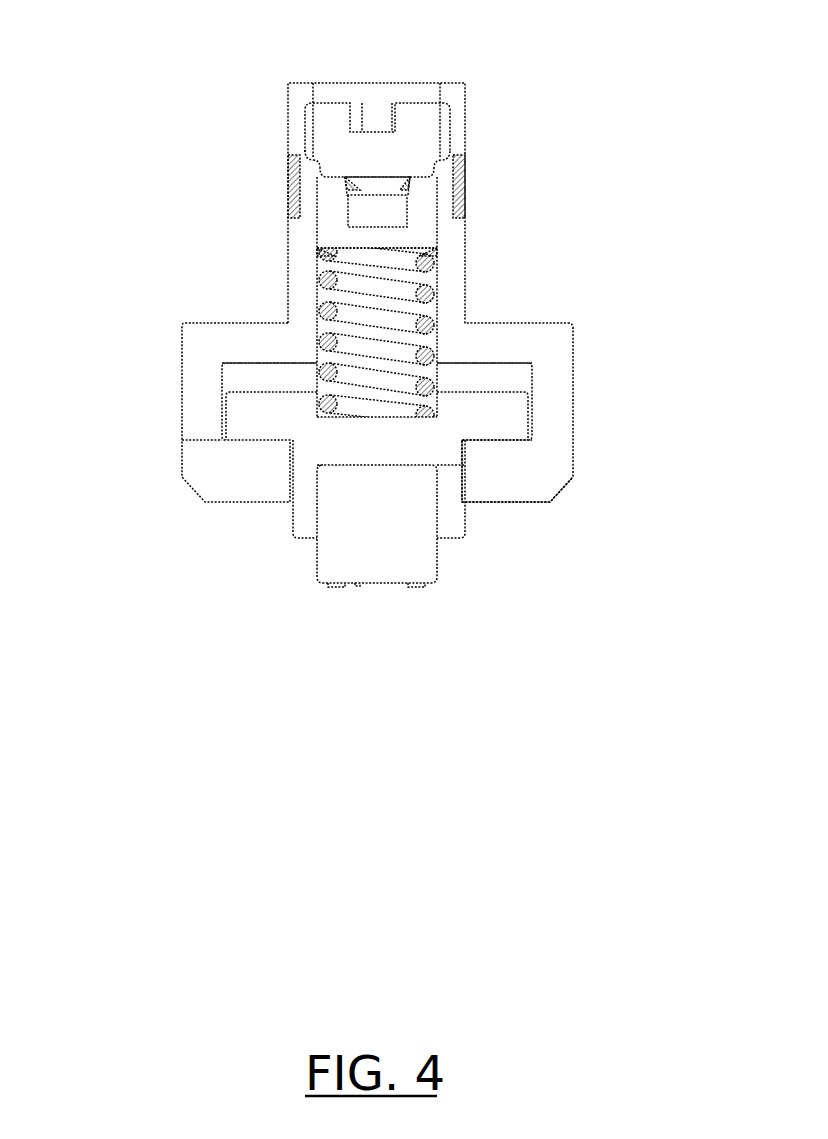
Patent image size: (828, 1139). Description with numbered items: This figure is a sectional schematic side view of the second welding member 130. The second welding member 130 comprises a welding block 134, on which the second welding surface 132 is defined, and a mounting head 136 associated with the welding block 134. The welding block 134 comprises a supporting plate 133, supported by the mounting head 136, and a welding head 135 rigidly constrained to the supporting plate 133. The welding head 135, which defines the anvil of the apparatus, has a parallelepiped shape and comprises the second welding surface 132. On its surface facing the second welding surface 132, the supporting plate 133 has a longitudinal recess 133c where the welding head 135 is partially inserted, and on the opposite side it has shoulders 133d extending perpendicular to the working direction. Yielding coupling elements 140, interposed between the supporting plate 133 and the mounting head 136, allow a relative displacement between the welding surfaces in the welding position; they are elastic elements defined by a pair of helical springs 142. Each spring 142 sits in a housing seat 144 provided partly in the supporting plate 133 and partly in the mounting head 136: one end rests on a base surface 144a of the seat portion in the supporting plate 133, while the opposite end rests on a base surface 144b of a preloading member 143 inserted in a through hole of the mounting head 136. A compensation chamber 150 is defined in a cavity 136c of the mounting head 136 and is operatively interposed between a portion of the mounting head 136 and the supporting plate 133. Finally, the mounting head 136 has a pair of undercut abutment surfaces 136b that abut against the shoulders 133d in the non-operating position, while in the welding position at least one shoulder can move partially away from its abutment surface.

The second welding member 130 is at (204, 176).
The second welding surface 132 is at (377, 587).
The supporting plate 133 is at (532, 425).
The longitudinal recess 133c is at (405, 467).
The shoulders 133d is at (248, 417).
The welding block 134 is at (483, 463).
The welding head 135 is at (385, 517).
The mounting head 136 is at (472, 228).
The undercut abutment surfaces 136b is at (247, 440).
The cavity 136c is at (258, 370).
The yielding coupling elements 140 is at (441, 253).
The helical spring 142 is at (434, 331).
The preloading member 143 is at (455, 138).
The housing seat 144 is at (318, 296).
The base surface 144a is at (328, 417).
The base surface 144b is at (371, 250).
The compensation chamber 150 is at (491, 371).